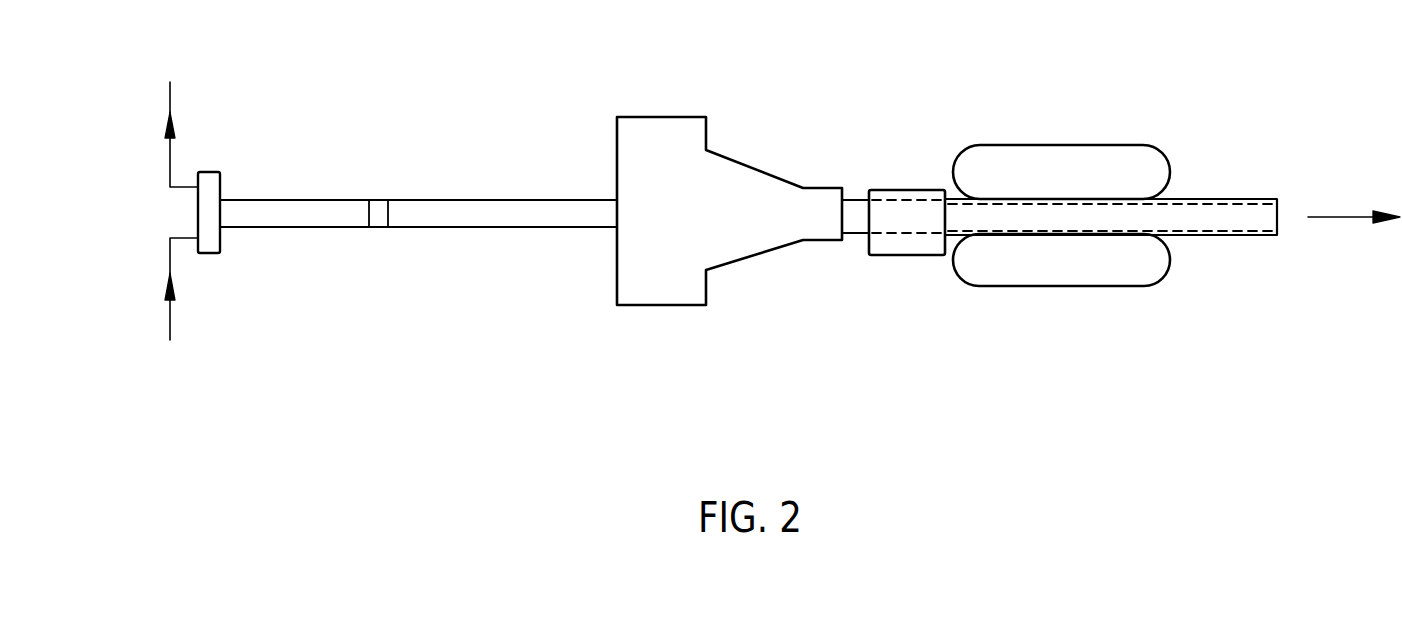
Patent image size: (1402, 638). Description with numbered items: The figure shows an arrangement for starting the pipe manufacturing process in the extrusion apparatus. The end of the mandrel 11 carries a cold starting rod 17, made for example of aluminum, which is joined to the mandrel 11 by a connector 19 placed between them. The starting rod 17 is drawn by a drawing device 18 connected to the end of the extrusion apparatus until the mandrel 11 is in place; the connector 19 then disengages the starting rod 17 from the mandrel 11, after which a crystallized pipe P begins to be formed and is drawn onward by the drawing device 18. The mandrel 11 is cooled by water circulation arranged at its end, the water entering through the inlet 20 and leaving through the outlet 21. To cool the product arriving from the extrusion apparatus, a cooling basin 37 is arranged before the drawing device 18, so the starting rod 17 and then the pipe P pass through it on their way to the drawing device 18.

The mandrel 11 is at (287, 220).
The cold starting rod 17 is at (505, 218).
The drawing device 18 is at (1055, 143).
The connector 19 is at (378, 220).
The inlet of water 20 is at (173, 325).
The outlet 21 is at (170, 97).
The cooling basin 37 is at (925, 257).
The crystallized pipe P is at (1227, 198).